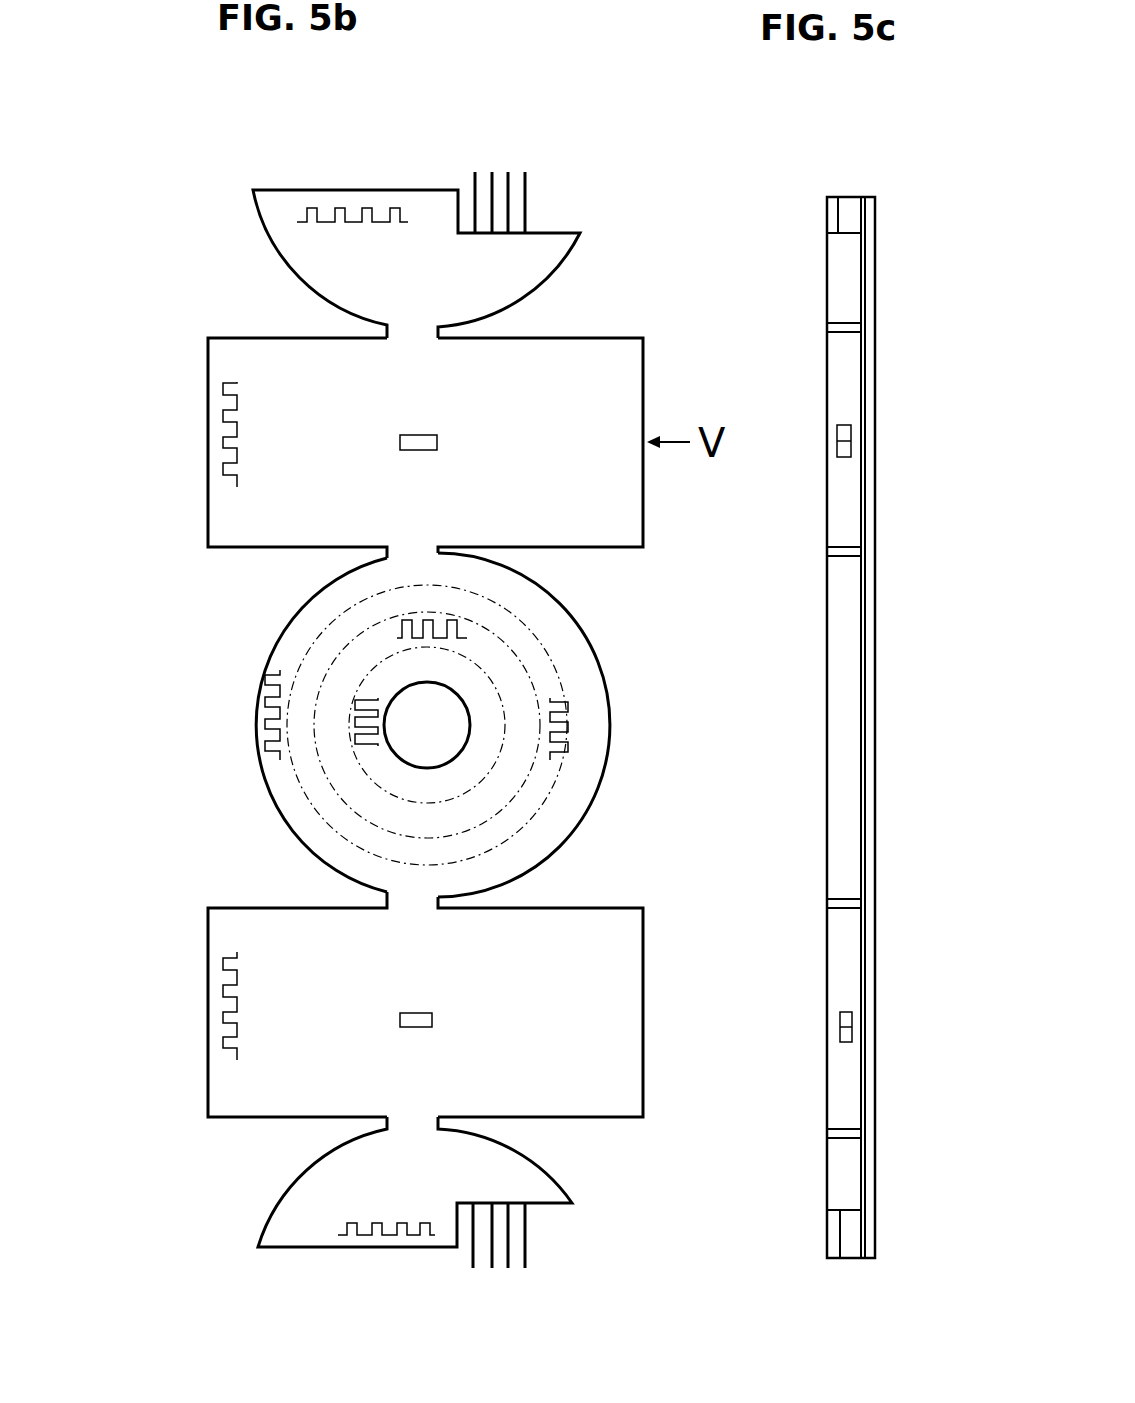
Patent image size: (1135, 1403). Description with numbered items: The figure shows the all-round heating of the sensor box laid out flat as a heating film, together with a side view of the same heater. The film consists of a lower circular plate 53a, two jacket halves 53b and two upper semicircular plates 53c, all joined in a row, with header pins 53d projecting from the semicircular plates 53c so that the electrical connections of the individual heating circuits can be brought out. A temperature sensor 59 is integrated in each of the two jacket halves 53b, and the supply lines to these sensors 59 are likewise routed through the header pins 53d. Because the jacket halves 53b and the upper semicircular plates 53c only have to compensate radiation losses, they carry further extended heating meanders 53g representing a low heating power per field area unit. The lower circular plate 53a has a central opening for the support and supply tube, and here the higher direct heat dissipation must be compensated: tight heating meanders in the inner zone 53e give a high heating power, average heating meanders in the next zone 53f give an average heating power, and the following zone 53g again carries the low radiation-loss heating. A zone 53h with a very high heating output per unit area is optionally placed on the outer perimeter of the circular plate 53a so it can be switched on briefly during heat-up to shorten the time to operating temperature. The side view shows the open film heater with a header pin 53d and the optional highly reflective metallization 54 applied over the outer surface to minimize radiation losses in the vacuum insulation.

In FIG. 5b, the lower circular plate 53a is at (597, 725).
In FIG. 5c, the lower circular plate 53a is at (845, 725).
In FIG. 5b, the jacket halves 53b is at (242, 360).
In FIG. 5b, the upper semicircular plates 53c is at (342, 256).
In FIG. 5b, the header pins 53d is at (525, 185).
In FIG. 5c, the header pins 53d is at (838, 180).
In FIG. 5b, the inner zone 53e is at (368, 749).
In FIG. 5b, the next zone 53f is at (458, 630).
In FIG. 5b, the heating meanders 53g is at (327, 221).
In FIG. 5b, the zone with very high heating output 53h is at (268, 725).
In FIG. 5c, the reflective metallization 54 is at (868, 863).
In FIG. 5b, the temperature sensor 59 is at (419, 443).
In FIG. 5c, the temperature sensor 59 is at (843, 437).